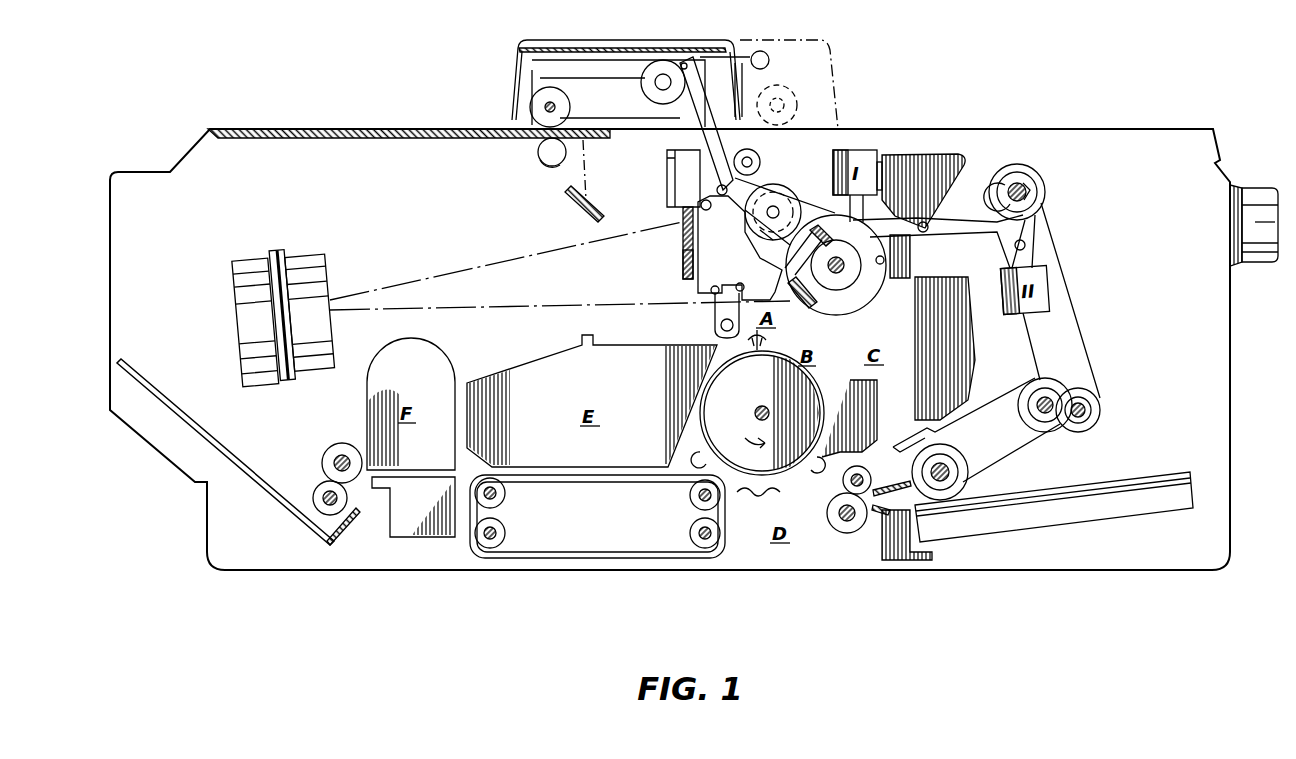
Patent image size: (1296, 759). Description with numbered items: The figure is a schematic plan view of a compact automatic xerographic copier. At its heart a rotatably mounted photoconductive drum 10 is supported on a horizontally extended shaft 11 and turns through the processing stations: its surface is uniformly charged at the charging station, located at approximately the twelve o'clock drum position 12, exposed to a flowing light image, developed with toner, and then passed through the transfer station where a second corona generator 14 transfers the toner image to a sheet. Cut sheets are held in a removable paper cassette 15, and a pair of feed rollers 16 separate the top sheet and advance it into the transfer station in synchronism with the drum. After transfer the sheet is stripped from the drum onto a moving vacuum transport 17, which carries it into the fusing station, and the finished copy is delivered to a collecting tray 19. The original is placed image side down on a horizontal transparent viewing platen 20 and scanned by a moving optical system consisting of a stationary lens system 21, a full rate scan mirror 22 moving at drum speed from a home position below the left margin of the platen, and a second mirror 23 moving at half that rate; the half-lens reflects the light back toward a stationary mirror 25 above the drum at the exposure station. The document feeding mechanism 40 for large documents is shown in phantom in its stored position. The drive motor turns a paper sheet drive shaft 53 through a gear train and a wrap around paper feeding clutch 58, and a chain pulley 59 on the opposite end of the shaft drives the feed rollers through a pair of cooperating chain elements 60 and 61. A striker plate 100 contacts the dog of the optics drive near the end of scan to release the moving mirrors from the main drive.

The photoconductive drum 10 is at (790, 470).
The shaft 11 is at (758, 412).
The drum spring 12 is at (760, 350).
The second corona generator 14 is at (740, 498).
The paper cassette 15 is at (1068, 522).
The feed rollers 16 is at (968, 484).
The vacuum transport 17 is at (624, 550).
The collecting tray 19 is at (290, 528).
The viewing platen 20 is at (342, 129).
The lens system 21 is at (306, 258).
The full rate scan mirror 22 is at (568, 210).
The second mirror 23 is at (683, 268).
The stationary mirror 25 is at (802, 312).
The document feeding mechanism 40 is at (658, 42).
The paper sheet drive shaft 53 is at (1034, 202).
The paper feeding clutch 58 is at (1030, 186).
The chain pulley 59 is at (1024, 148).
The chain element 60 is at (1086, 312).
The chain element 61 is at (996, 412).
The striker plate 100 is at (683, 248).